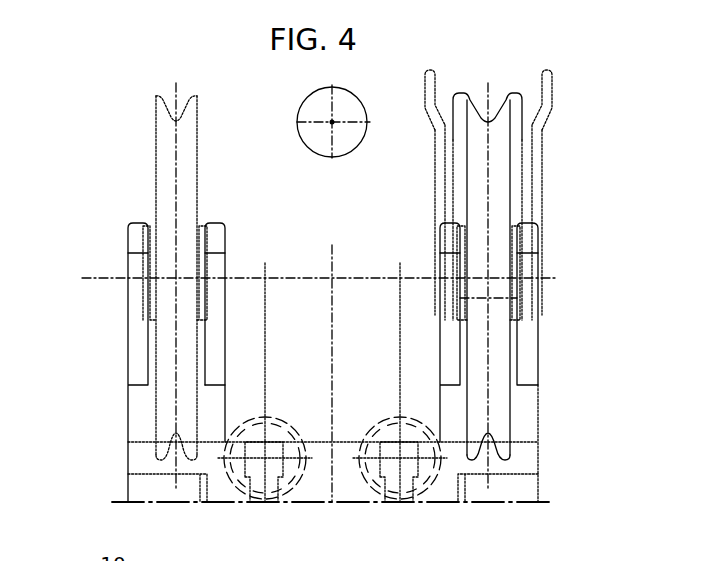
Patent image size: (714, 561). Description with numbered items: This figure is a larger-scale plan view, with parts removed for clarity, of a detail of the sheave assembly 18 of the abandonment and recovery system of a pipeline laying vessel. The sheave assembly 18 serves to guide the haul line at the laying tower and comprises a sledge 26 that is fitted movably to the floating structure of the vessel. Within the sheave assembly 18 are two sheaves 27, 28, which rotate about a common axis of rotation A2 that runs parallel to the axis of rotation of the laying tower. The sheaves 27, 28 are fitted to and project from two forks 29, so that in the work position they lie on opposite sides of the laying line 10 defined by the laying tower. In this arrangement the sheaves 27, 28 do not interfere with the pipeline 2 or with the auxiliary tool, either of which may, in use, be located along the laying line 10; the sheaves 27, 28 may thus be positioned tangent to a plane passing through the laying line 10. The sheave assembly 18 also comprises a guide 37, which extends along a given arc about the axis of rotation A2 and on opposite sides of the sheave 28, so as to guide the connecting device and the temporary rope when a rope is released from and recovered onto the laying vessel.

The pipeline 2 is at (300, 103).
The laying line 10 is at (330, 126).
The sheave assembly 18 is at (573, 452).
The sledge 26 is at (352, 492).
The sheave 27 is at (160, 142).
The sheave 28 is at (495, 194).
The forks 29 is at (130, 367).
The guide 37 is at (570, 88).
The axis of rotation A2 is at (82, 278).